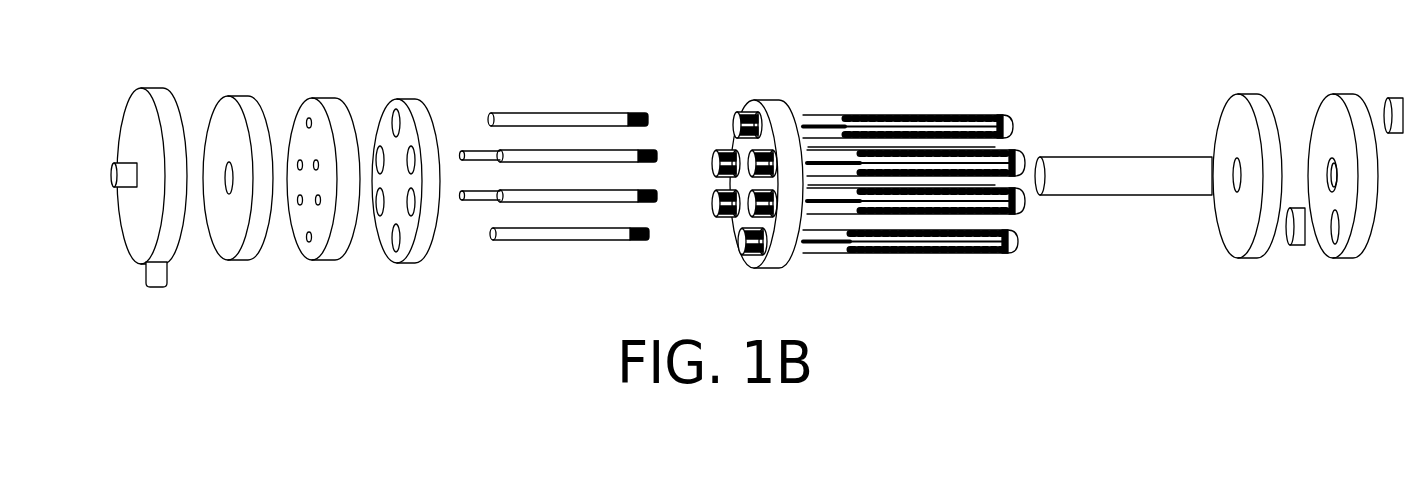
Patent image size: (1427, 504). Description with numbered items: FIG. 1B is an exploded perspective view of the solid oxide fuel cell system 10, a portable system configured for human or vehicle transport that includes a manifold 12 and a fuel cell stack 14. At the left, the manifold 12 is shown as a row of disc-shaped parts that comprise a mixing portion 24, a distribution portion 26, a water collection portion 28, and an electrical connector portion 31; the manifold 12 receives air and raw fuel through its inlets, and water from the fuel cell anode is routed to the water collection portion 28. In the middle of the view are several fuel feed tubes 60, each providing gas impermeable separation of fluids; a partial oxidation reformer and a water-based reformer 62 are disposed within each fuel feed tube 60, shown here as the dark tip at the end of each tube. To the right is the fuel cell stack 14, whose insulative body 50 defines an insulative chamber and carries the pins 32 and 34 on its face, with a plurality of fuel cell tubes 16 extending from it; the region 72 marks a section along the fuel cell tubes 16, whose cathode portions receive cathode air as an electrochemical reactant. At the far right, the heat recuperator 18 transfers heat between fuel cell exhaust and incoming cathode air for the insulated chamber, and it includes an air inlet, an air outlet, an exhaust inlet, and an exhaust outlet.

The solid oxide fuel cell system 10 is at (100, 153).
The manifold 12 is at (113, 90).
The fuel cell stack 14 is at (1016, 124).
The fuel cell tube 16 is at (1018, 243).
The heat recuperator 18 is at (1213, 218).
The mixing portion 24 is at (136, 103).
The distribution portion 26 is at (233, 243).
The water collection portion 28 is at (317, 243).
The electrical connector portion 31 is at (415, 245).
The pin 32 is at (748, 114).
The pin 34 is at (746, 137).
The insulative body 50 is at (775, 255).
The fuel feed tube 60 is at (538, 231).
The water-based reformer 62 is at (646, 241).
The heater section 72 is at (845, 113).